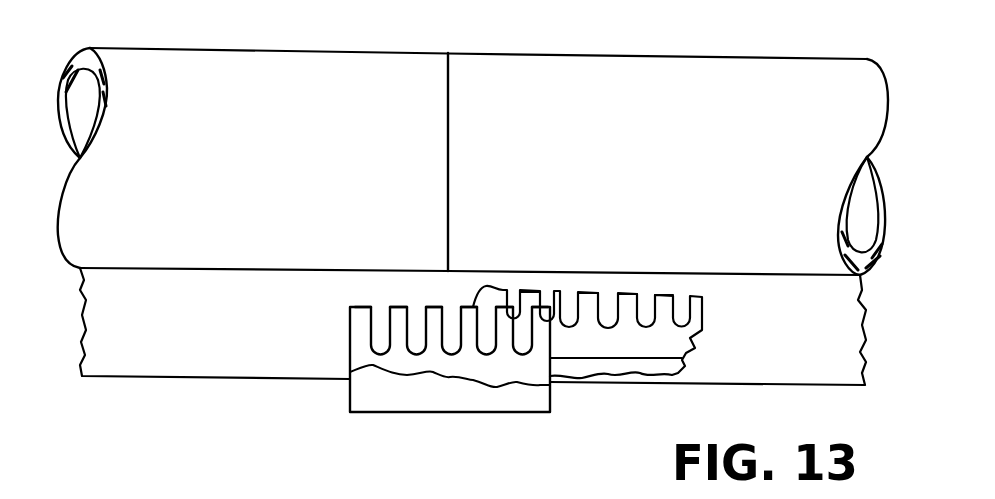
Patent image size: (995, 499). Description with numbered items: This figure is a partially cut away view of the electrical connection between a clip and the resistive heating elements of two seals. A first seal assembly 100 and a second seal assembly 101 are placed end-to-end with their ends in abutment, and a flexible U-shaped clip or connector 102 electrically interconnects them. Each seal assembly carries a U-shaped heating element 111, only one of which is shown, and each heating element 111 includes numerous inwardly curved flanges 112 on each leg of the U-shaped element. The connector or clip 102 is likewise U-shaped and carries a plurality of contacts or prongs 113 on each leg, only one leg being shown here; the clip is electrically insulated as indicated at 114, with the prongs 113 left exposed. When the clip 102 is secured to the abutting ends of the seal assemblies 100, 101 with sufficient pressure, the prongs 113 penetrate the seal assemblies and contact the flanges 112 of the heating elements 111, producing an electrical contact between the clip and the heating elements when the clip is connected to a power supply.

The seal assembly 100 is at (630, 57).
The seal assembly 101 is at (312, 53).
The clip or connector 102 is at (331, 399).
The heating element 111 is at (623, 343).
The inwardly curved flanges 112 is at (558, 298).
The contacts or prongs 113 is at (432, 306).
The electrical insulation 114 is at (402, 394).